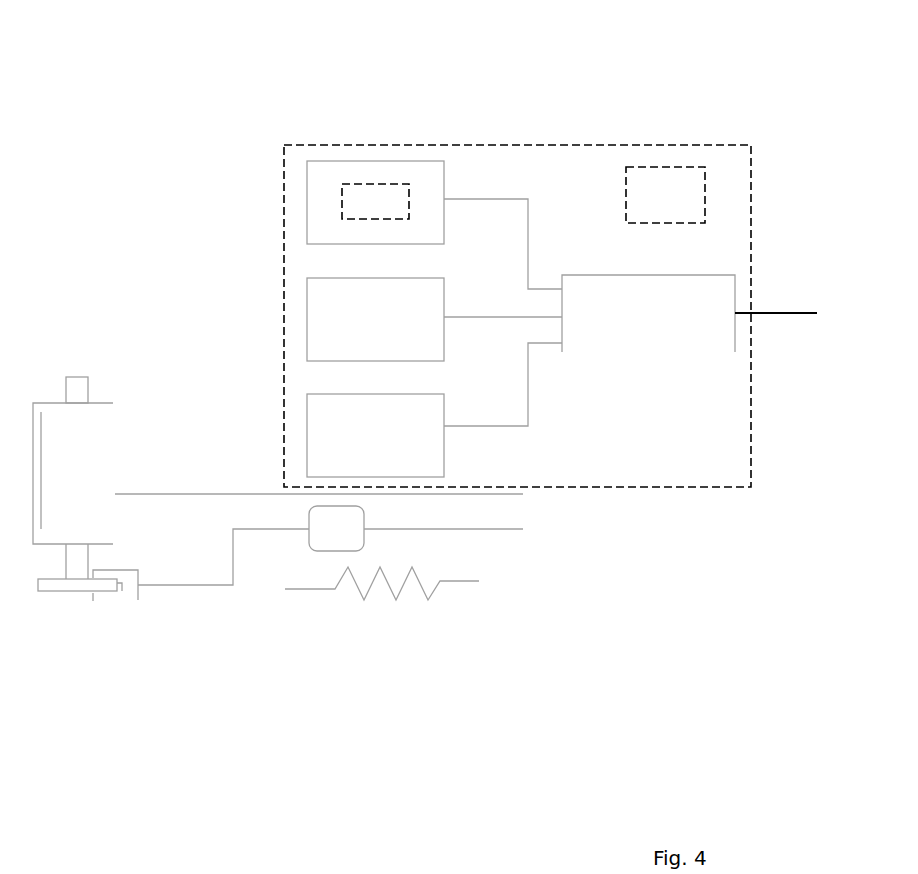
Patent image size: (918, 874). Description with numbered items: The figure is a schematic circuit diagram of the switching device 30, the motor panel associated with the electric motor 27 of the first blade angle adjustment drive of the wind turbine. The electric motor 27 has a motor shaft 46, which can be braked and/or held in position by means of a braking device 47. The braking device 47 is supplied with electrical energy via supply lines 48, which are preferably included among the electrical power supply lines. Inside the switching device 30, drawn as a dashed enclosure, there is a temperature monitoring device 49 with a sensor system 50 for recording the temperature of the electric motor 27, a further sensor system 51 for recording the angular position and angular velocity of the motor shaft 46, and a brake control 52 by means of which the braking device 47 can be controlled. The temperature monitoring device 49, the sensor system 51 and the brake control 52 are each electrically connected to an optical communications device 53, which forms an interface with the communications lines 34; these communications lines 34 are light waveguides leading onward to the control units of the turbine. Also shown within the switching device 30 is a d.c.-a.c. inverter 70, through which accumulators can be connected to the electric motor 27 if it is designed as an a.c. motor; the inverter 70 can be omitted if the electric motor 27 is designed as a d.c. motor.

The switching device 30 is at (515, 95).
The temperature monitoring device 49 is at (340, 170).
The sensor system 50 is at (394, 184).
The d.c.-a.c. inverter 70 is at (676, 167).
The sensor system 51 is at (440, 345).
The brake control 52 is at (440, 456).
The optical communications device 53 is at (652, 346).
The communications lines 34 is at (783, 313).
The electric motor 27 is at (114, 441).
The motor shaft 46 is at (78, 376).
The braking device 47 is at (130, 601).
The supply lines 48 is at (503, 529).